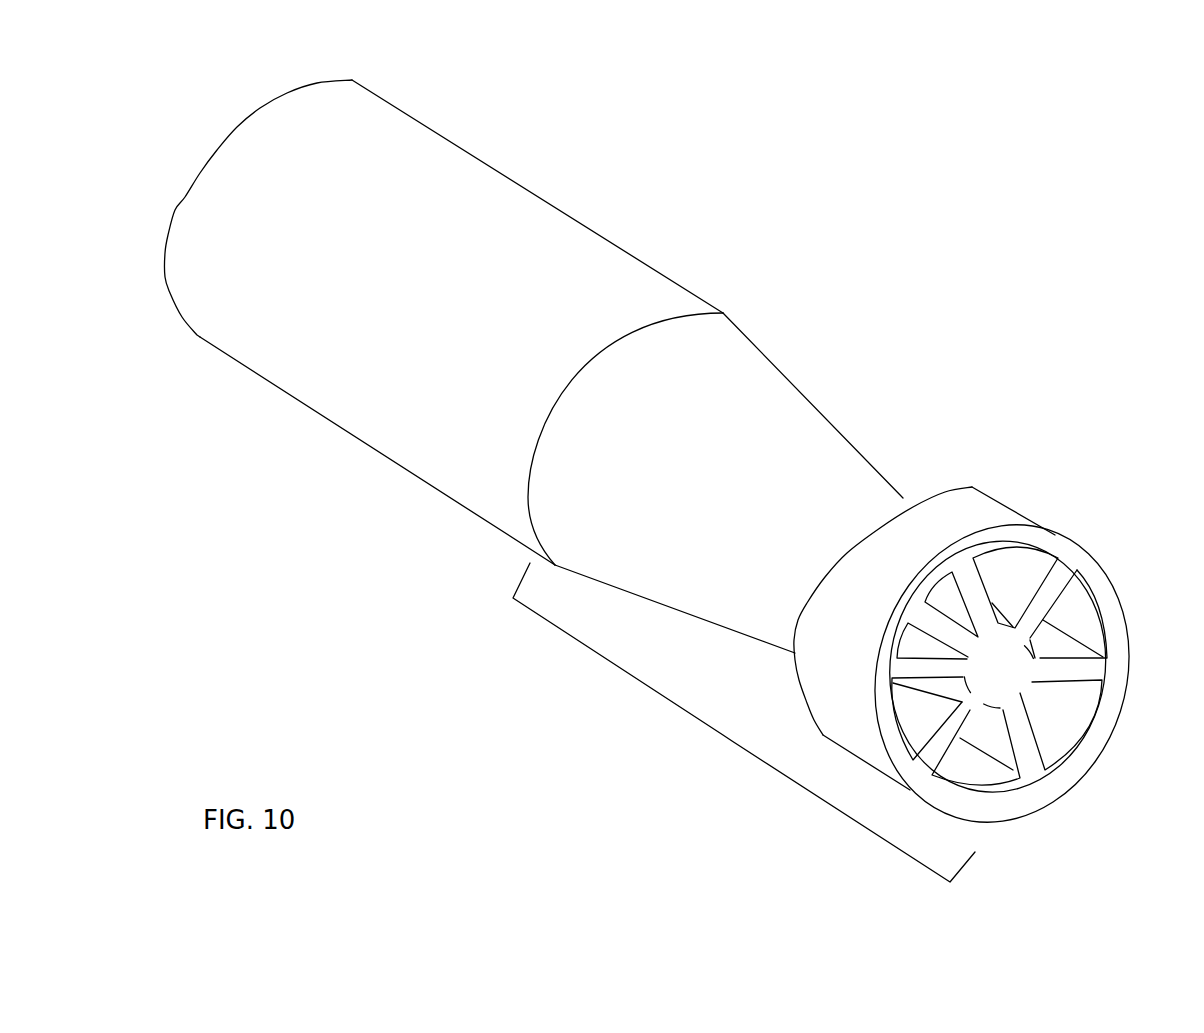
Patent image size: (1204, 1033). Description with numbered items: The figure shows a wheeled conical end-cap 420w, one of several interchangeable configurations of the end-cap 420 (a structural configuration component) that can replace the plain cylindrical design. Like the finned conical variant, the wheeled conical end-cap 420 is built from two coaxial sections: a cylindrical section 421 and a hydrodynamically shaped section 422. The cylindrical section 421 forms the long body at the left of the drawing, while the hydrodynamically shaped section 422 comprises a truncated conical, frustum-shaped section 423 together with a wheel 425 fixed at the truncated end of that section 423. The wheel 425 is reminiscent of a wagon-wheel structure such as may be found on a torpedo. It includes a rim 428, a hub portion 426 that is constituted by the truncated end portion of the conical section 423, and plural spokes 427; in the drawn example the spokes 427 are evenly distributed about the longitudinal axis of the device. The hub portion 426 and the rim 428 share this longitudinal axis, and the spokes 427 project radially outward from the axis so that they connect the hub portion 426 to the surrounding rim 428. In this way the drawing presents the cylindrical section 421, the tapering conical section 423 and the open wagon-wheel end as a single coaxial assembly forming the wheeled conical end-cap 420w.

The end-cap 420 is at (666, 481).
The wheeled conical end-cap 420w is at (666, 481).
The cylindrical section 421 is at (373, 355).
The hydrodynamically shaped section 422 is at (723, 735).
The truncated conical section 423 is at (757, 405).
The wheel 425 is at (980, 625).
The hub portion 426 is at (1000, 677).
The spokes 427 is at (1020, 738).
The rim 428 is at (982, 512).